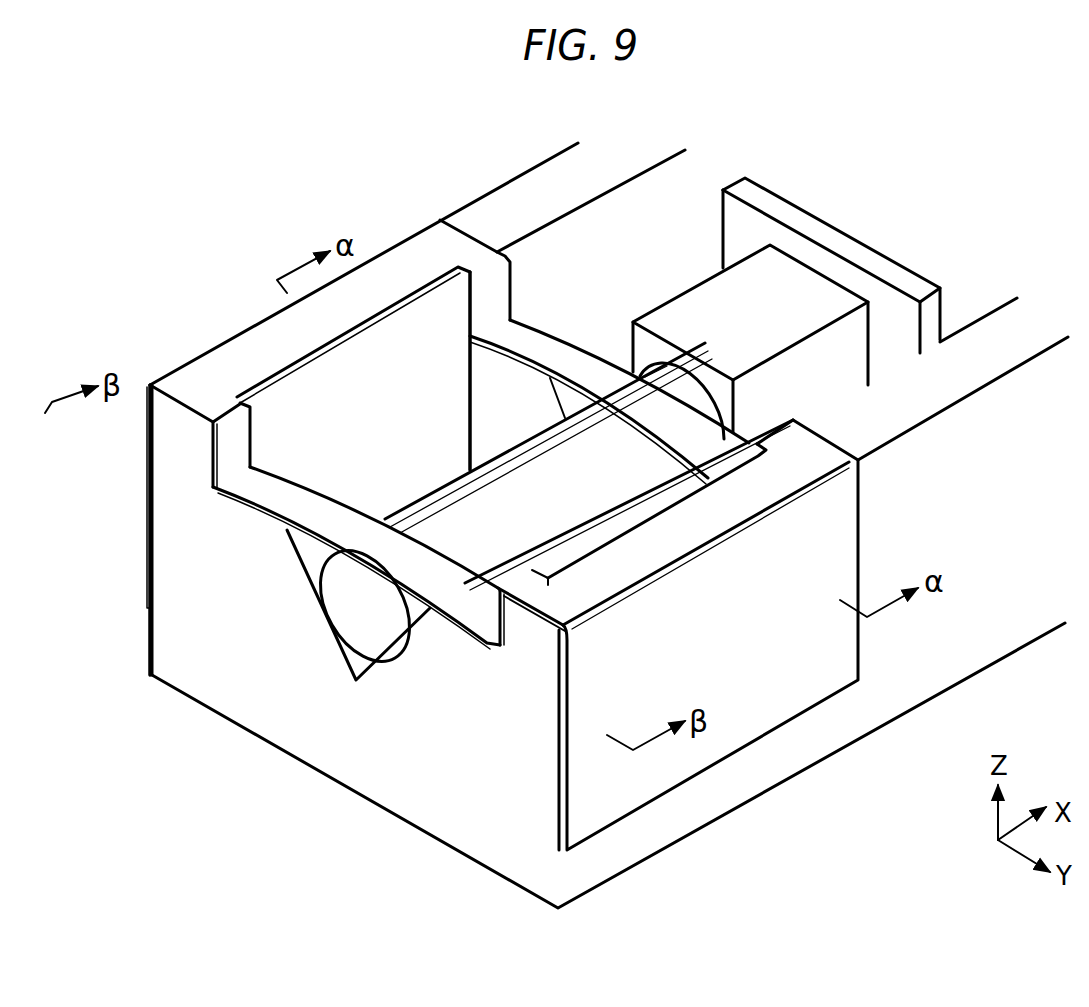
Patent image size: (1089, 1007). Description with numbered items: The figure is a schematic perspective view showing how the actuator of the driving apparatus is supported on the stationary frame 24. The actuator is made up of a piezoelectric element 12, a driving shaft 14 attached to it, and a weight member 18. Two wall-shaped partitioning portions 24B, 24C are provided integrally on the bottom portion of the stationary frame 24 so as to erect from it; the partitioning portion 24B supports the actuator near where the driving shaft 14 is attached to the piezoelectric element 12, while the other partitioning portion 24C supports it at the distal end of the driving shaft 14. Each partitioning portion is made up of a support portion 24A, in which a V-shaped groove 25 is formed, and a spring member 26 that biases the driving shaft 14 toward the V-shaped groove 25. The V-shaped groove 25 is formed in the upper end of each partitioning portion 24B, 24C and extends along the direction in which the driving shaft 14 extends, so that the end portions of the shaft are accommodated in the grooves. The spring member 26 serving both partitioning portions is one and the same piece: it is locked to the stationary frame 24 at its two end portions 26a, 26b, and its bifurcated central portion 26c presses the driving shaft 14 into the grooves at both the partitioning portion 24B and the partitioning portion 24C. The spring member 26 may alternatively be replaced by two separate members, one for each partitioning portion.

The piezoelectric element 12 is at (705, 305).
The driving shaft 14 is at (577, 487).
The weight member 18 is at (812, 235).
The stationary frame 24 is at (468, 199).
The support portion 24A is at (190, 622).
The partitioning portion 24B is at (585, 288).
The partitioning portion 24C is at (318, 440).
The V-shaped groove 25 is at (313, 545).
The spring member 26 is at (222, 381).
The end portion 26a is at (615, 680).
The end portion 26b is at (147, 481).
The central portion 26c is at (326, 512).